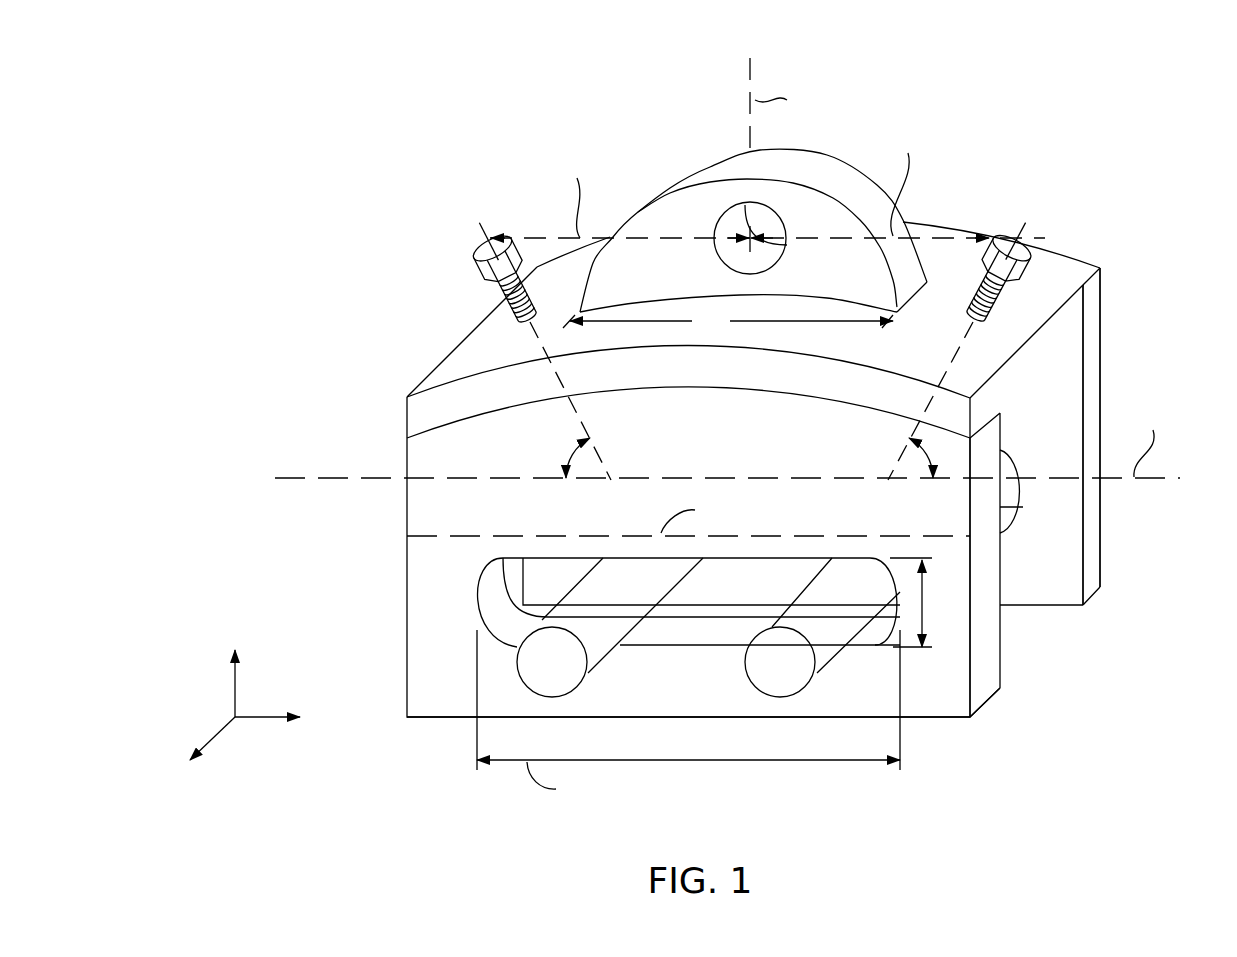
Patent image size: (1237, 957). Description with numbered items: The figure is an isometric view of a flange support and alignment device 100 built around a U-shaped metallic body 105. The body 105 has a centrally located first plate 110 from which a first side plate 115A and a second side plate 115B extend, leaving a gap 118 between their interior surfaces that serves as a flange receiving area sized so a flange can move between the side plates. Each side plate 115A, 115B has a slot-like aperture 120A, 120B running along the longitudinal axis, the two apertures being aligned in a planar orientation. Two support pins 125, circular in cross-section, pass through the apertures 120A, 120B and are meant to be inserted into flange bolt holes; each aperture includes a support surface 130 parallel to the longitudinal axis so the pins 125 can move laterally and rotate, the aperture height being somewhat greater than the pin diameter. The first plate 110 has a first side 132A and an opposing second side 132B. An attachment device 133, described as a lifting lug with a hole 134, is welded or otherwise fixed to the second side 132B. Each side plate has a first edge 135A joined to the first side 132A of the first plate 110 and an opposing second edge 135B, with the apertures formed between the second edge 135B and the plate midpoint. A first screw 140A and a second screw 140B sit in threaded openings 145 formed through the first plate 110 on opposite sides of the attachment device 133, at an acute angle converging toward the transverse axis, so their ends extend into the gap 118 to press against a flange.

The flange support and alignment device 100 is at (1097, 93).
The body 105 is at (1106, 268).
The first plate 110 is at (1054, 272).
The first side plate 115A is at (951, 710).
The second side plate 115B is at (1103, 542).
The gap 118 is at (1016, 688).
The aperture 120A is at (879, 622).
The aperture 120B is at (1010, 505).
The support pins 125 is at (548, 679).
The support surface 130 is at (727, 632).
The first side 132A is at (1065, 348).
The second side 132B is at (477, 356).
The attachment device 133 is at (823, 168).
The hole 134 is at (766, 258).
The first edge 135A is at (1103, 328).
The second edge 135B is at (1095, 594).
The first screw 140A is at (490, 262).
The second screw 140B is at (990, 240).
The threaded openings 145 is at (500, 328).